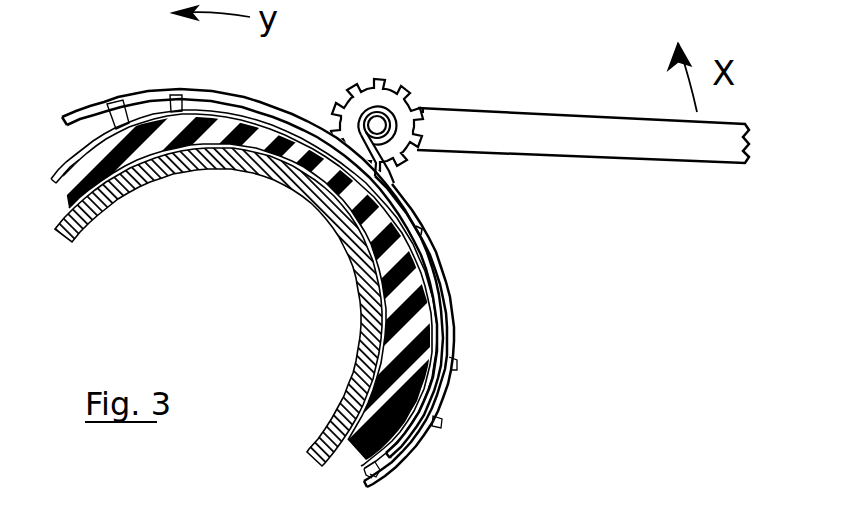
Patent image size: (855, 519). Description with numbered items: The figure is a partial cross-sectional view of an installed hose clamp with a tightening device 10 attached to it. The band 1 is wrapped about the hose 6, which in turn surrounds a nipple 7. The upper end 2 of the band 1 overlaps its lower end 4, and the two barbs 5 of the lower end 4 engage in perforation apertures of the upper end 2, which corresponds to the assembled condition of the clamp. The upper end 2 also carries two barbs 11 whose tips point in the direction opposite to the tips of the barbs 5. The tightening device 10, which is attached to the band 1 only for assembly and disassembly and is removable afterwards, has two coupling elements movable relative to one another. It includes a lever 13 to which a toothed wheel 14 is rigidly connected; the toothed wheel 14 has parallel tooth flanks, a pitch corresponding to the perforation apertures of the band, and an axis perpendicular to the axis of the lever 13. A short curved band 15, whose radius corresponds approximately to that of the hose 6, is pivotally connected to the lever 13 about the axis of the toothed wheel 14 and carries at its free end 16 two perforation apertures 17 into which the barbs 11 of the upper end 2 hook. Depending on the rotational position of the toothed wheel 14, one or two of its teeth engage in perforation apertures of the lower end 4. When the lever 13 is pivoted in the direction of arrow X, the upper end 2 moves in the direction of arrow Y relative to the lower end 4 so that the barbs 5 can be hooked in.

The band 1 is at (397, 208).
The upper end 2 is at (259, 101).
The lower end 4 is at (309, 136).
The barbs 5 is at (124, 107).
The hose 6 is at (71, 174).
The nipple 7 is at (97, 200).
The tightening device 10 is at (421, 110).
The barbs 11 is at (443, 422).
The lever 13 is at (579, 143).
The toothed wheel 14 is at (363, 100).
The short curved band 15 is at (446, 274).
The free end 16 is at (418, 432).
The perforation apertures 17 is at (459, 359).